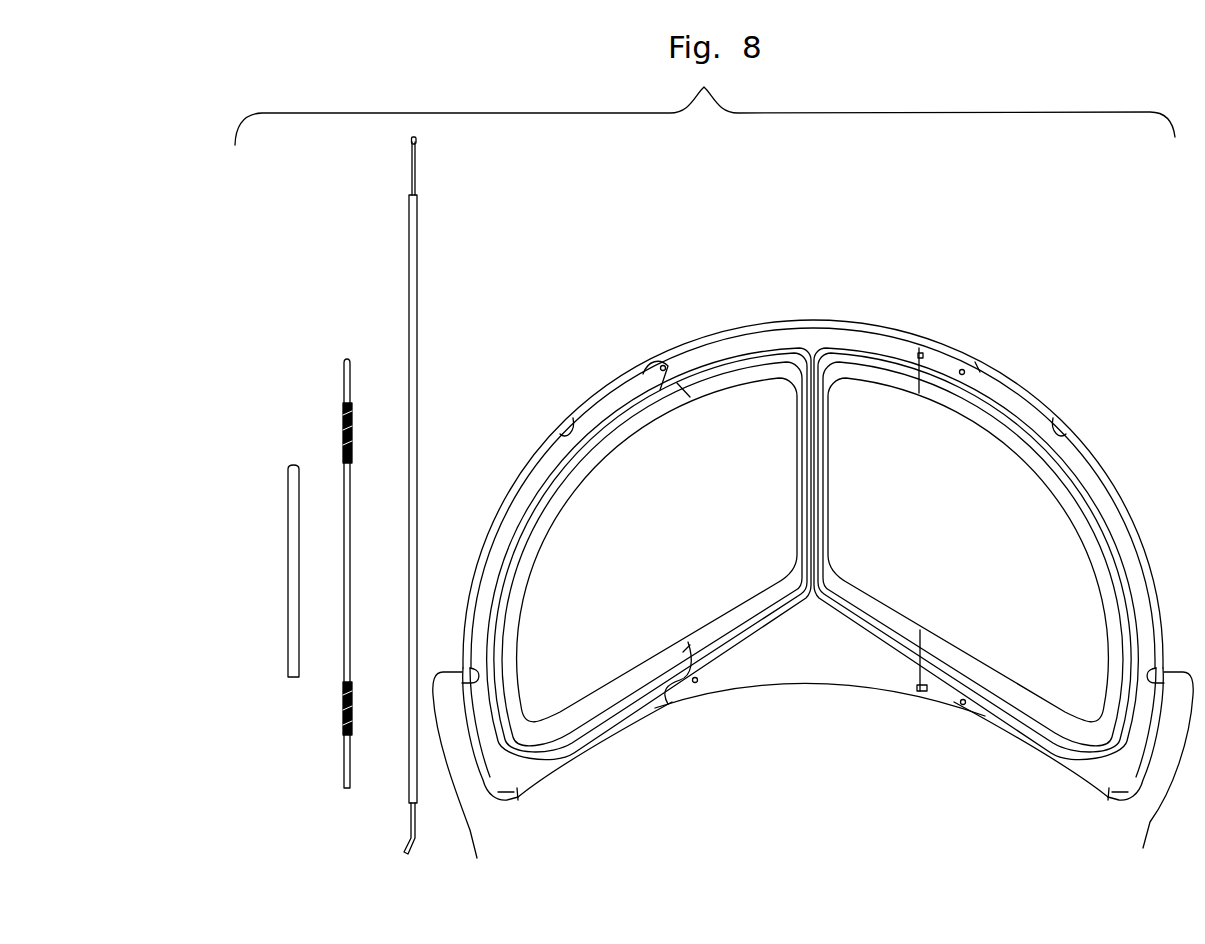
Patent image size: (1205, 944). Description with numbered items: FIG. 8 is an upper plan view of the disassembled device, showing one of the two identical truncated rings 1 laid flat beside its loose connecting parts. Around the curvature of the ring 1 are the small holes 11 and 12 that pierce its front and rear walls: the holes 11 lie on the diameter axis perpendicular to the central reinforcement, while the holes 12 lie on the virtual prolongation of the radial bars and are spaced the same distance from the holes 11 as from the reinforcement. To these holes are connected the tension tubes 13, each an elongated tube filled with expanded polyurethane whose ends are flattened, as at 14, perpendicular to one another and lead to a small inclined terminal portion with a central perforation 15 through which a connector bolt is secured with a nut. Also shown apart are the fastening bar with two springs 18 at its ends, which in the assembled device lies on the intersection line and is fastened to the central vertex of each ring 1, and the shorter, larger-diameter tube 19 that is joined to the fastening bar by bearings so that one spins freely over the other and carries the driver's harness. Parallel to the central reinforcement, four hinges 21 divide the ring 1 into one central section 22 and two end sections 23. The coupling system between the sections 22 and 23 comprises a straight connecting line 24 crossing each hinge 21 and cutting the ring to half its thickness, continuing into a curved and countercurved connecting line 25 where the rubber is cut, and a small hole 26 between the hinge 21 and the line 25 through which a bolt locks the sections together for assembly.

The truncated ring 1 is at (794, 319).
The small hole 11 is at (813, 781).
The small hole 12 is at (565, 428).
The tension tube 13 is at (410, 245).
The flattened end 14 is at (411, 180).
The central perforation 15 is at (412, 140).
The fastening bar with two springs 18 is at (348, 418).
The tube 19 is at (288, 542).
The hinge 21 is at (912, 352).
The central section 22 is at (812, 662).
The end section 23 is at (613, 727).
The straight connecting line 24 is at (913, 355).
The curved and countercurved connecting line 25 is at (655, 370).
The small hole 26 is at (664, 365).